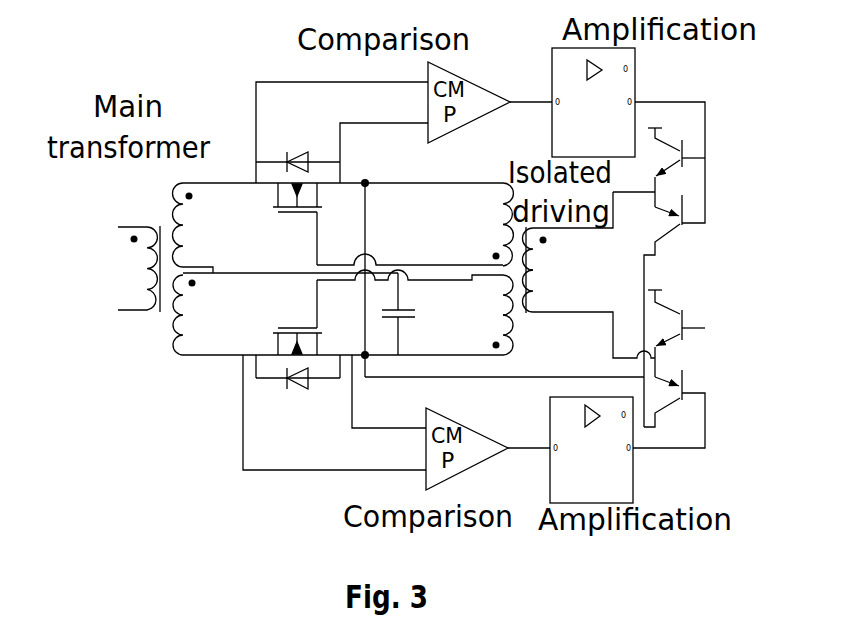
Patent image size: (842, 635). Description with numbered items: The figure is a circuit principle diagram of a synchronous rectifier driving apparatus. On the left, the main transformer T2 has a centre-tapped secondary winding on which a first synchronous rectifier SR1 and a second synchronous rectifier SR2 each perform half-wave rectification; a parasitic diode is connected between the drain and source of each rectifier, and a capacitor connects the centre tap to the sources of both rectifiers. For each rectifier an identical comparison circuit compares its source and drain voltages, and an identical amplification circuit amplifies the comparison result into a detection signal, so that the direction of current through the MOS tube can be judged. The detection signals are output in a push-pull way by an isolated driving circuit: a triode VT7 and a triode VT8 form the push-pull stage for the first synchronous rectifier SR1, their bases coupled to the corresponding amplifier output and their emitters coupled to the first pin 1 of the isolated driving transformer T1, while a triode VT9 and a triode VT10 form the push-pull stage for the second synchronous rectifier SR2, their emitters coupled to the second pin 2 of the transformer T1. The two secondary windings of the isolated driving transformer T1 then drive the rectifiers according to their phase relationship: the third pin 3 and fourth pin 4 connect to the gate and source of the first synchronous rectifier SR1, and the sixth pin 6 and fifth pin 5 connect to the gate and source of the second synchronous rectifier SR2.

The first pin of the isolated driving transformer 1 is at (568, 231).
The second pin of the isolated driving transformer 2 is at (589, 314).
The third pin of the isolated driving transformer 3 is at (497, 246).
The fourth pin of the isolated driving transformer 4 is at (497, 204).
The fifth pin of the isolated driving transformer 5 is at (497, 335).
The sixth pin of the isolated driving transformer 6 is at (497, 295).
The isolated driving transformer T1 is at (360, 269).
The main transformer T2 is at (134, 242).
The first synchronous rectifier SR1 is at (283, 224).
The second synchronous rectifier SR2 is at (295, 358).
The triode VT7 is at (675, 156).
The triode VT8 is at (676, 311).
The triode VT9 is at (674, 327).
The triode VT10 is at (675, 405).